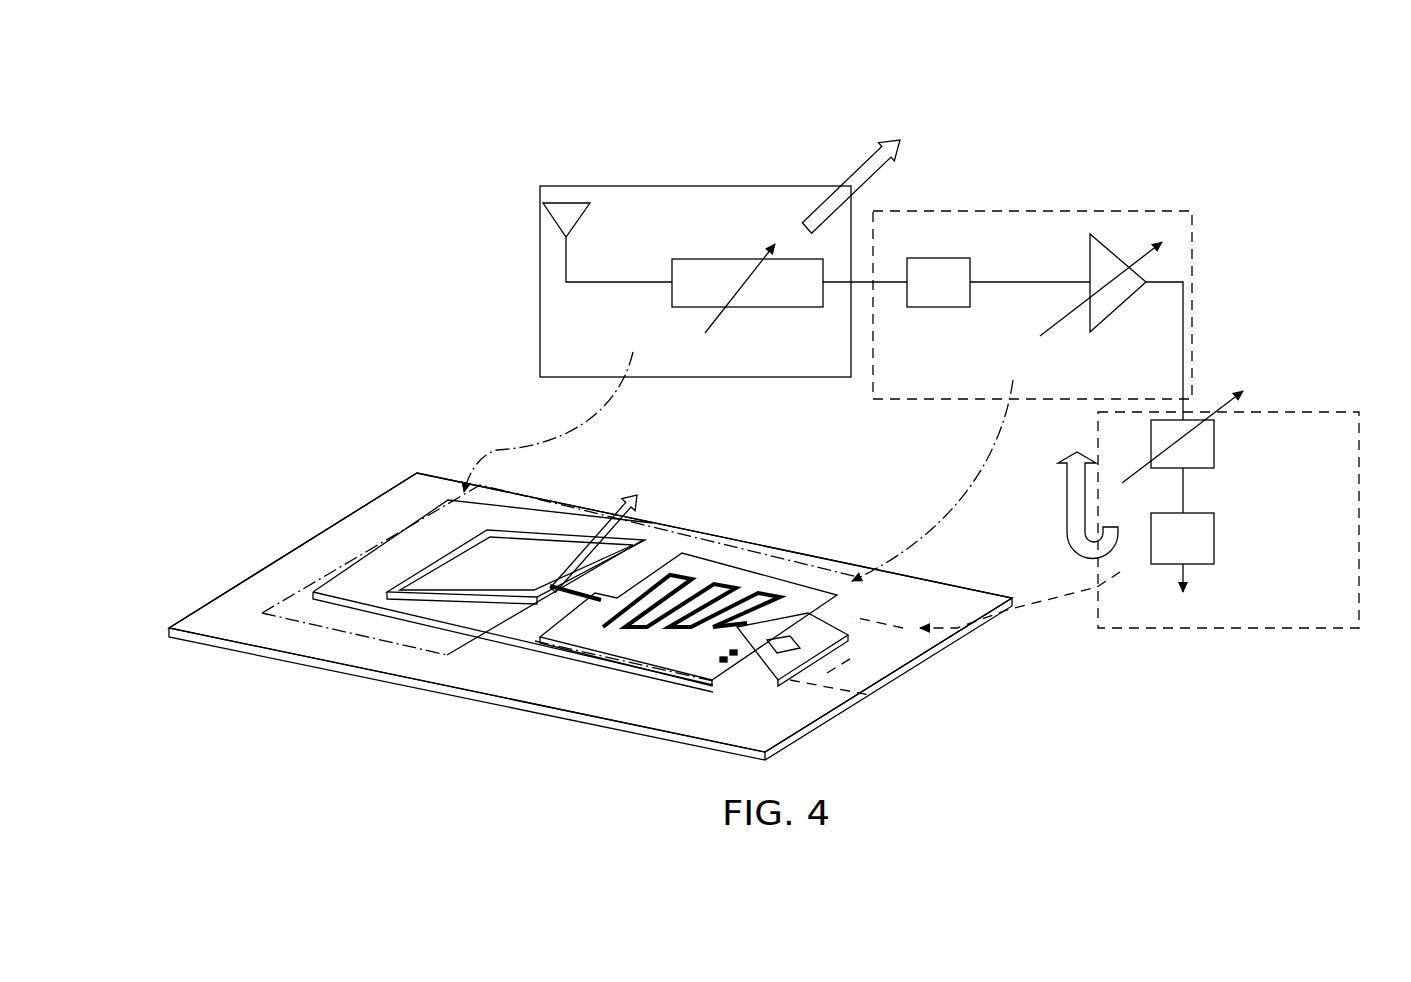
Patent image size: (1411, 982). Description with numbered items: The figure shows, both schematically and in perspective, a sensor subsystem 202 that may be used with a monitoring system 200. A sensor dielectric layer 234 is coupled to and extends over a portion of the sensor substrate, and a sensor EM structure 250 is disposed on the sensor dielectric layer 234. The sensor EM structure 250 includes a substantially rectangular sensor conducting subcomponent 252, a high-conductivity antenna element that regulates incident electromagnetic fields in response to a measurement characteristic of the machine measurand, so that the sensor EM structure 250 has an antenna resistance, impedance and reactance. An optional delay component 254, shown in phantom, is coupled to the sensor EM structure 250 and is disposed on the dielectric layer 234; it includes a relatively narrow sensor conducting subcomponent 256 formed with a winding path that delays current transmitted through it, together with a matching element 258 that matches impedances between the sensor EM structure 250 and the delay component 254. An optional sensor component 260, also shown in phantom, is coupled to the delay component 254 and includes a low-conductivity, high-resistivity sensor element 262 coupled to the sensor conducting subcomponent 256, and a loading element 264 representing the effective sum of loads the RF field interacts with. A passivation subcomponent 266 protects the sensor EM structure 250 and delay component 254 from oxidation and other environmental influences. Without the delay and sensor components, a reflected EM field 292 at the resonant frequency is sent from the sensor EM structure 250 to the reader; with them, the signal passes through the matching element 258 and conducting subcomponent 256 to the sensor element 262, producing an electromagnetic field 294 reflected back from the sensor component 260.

The monitoring system 200 is at (478, 125).
The sensor subsystem 202 is at (599, 158).
The sensor dielectric layer 234 is at (420, 534).
The sensor electromagnetic (EM) structure 250 is at (540, 268).
The sensor conducting subcomponent 252 is at (725, 259).
The delay component 254 is at (1033, 211).
The sensor conducting subcomponent 256 is at (1108, 248).
The matching element 258 is at (940, 307).
The sensor component 260 is at (1282, 412).
The sensor element 262 is at (1195, 418).
The loading element 264 is at (1214, 528).
The passivation subcomponent 266 is at (632, 575).
The reflected EM field 292 is at (582, 575).
The electromagnetic field 294 is at (897, 137).